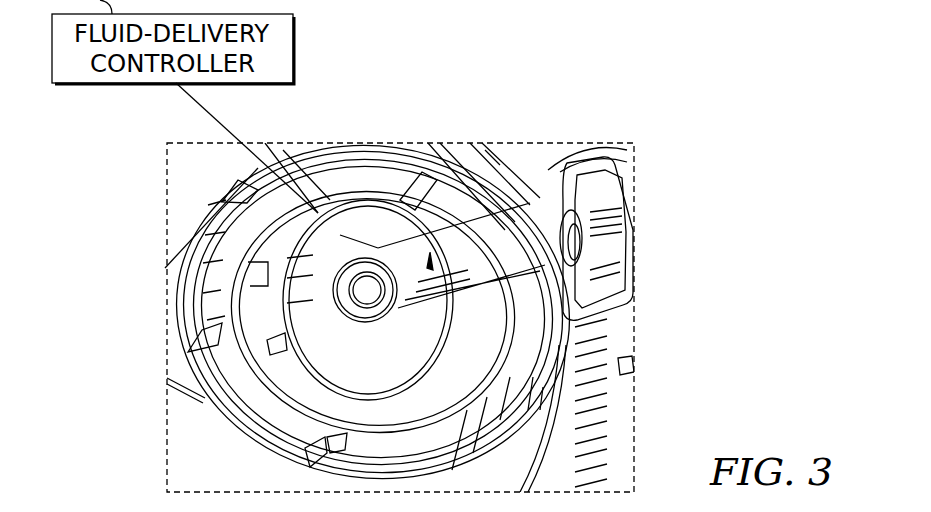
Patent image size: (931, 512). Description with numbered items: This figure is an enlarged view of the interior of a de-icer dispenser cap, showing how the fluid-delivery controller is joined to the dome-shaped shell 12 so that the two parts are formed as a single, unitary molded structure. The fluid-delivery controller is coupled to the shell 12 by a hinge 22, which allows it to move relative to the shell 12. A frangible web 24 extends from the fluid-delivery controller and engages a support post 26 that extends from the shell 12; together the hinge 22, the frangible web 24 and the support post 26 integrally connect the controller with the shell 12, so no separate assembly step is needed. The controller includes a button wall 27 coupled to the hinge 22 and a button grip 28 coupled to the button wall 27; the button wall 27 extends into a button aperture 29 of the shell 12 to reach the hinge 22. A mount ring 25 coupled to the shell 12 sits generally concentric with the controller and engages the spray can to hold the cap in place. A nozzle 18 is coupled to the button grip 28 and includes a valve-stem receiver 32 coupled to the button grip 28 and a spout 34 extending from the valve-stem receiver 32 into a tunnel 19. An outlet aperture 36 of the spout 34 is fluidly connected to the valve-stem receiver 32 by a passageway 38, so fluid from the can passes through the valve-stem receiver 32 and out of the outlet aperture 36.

The shell 12 is at (530, 423).
The nozzle 18 is at (781, 245).
The tunnel 19 is at (633, 237).
The hinge 22 is at (260, 323).
The frangible web 24 is at (494, 36).
The mount ring 25 is at (188, 369).
The support post 26 is at (701, 46).
The button wall 27 is at (250, 268).
The button grip 28 is at (250, 168).
The button aperture 29 is at (257, 222).
The valve-stem receiver 32 is at (330, 322).
The spout 34 is at (588, 150).
The outlet aperture 36 is at (620, 207).
The passageway 38 is at (490, 147).